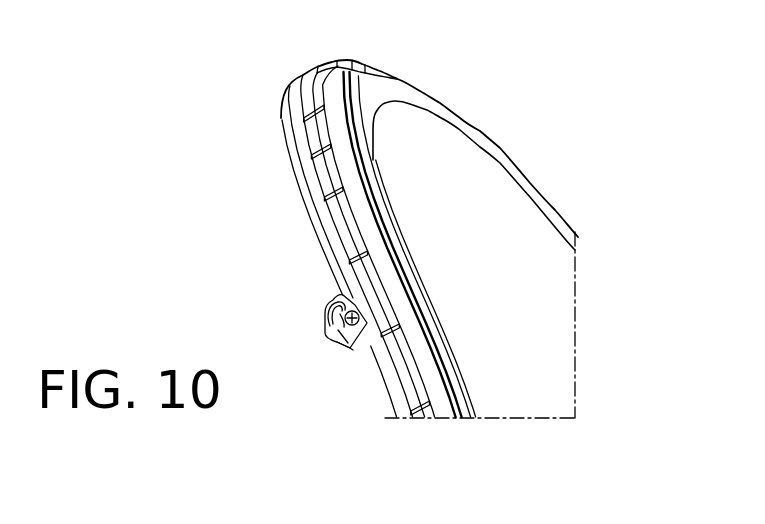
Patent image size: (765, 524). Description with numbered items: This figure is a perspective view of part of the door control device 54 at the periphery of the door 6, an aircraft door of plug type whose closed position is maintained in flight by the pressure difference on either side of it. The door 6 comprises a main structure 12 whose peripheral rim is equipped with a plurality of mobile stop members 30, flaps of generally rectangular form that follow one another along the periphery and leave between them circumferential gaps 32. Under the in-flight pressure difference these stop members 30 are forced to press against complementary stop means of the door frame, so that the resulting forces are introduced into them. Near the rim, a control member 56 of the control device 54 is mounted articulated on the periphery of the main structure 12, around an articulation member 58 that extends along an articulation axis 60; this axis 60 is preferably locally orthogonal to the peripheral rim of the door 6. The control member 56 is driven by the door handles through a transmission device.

The door 6 is at (518, 147).
The main structure 12 is at (438, 107).
The mobile stop members 30 is at (318, 173).
The circumferential gaps 32 is at (330, 189).
The door control device 54 is at (347, 353).
The control member 56 is at (338, 340).
The articulation member 58 is at (330, 303).
The articulation axis 60 is at (332, 322).